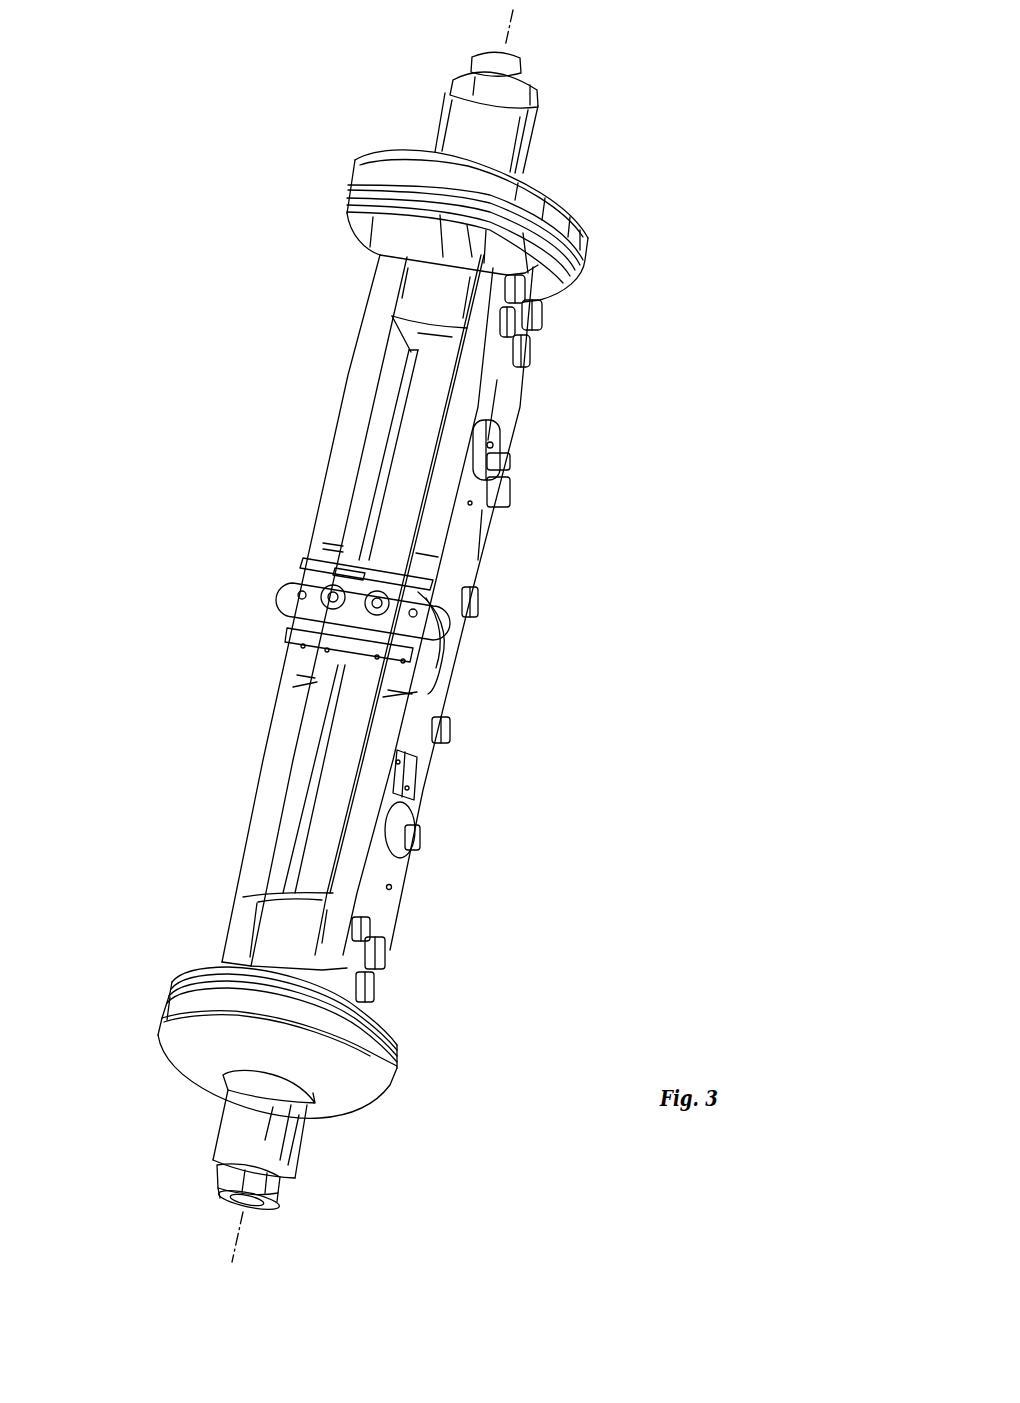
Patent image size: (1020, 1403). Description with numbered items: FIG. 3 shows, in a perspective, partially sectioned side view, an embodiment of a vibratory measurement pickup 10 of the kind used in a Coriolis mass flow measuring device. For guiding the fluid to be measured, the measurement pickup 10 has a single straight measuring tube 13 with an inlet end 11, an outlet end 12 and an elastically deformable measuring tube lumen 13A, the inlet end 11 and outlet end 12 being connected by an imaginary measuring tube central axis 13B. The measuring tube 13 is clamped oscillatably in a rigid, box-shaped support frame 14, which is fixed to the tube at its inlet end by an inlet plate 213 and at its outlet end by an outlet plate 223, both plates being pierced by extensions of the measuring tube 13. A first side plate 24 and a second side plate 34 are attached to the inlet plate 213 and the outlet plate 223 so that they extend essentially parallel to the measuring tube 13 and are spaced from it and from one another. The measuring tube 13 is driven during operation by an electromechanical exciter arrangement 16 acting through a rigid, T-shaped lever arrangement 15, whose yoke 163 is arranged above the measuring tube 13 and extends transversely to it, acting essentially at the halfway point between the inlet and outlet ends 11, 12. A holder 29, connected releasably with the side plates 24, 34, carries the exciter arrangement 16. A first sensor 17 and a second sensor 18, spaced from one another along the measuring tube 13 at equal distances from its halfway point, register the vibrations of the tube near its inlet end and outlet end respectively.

The measurement pickup 10 is at (387, 92).
The inlet end 11 is at (206, 900).
The outlet end 12 is at (320, 250).
The measuring tube 13 is at (397, 483).
The measuring tube lumen 13A is at (520, 50).
The measuring tube central axis 13B is at (500, 14).
The support frame 14 is at (240, 752).
The lever arrangement 15 is at (436, 652).
The electromechanical exciter arrangement 16 is at (258, 598).
The first sensor 17 is at (406, 815).
The second sensor 18 is at (498, 433).
The first side plate 24 is at (368, 337).
The holder 29 is at (290, 648).
The second side plate 34 is at (483, 388).
The yoke 163 is at (304, 576).
The inlet plate 213 is at (262, 896).
The outlet plate 223 is at (415, 293).